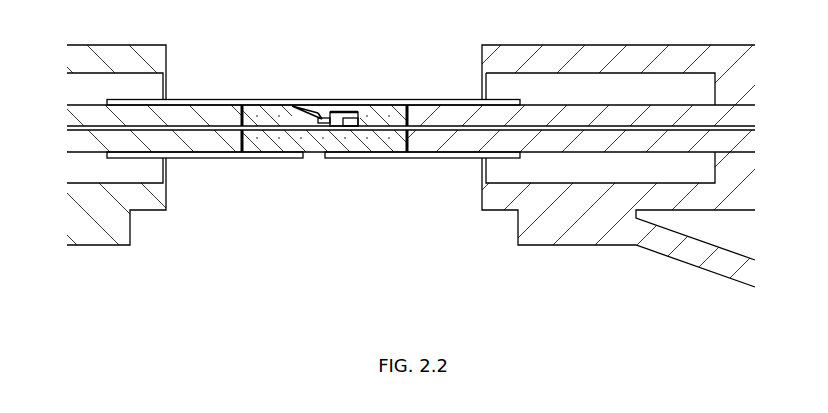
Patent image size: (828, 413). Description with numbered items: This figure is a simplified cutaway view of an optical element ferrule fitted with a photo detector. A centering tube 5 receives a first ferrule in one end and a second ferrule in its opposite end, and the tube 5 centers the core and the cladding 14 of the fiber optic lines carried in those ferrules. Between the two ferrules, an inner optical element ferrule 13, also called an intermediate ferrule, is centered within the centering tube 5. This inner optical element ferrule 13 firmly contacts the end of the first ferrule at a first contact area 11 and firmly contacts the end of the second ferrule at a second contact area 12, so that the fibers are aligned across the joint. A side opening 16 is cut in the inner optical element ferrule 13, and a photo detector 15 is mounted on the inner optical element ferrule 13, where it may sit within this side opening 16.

The centering tube 5 is at (240, 104).
The first contact area 11 is at (240, 133).
The second contact area 12 is at (407, 150).
The inner optical element ferrule 13 is at (390, 142).
The cladding 14 is at (404, 106).
The photo detector 15 is at (336, 110).
The side opening 16 is at (318, 107).